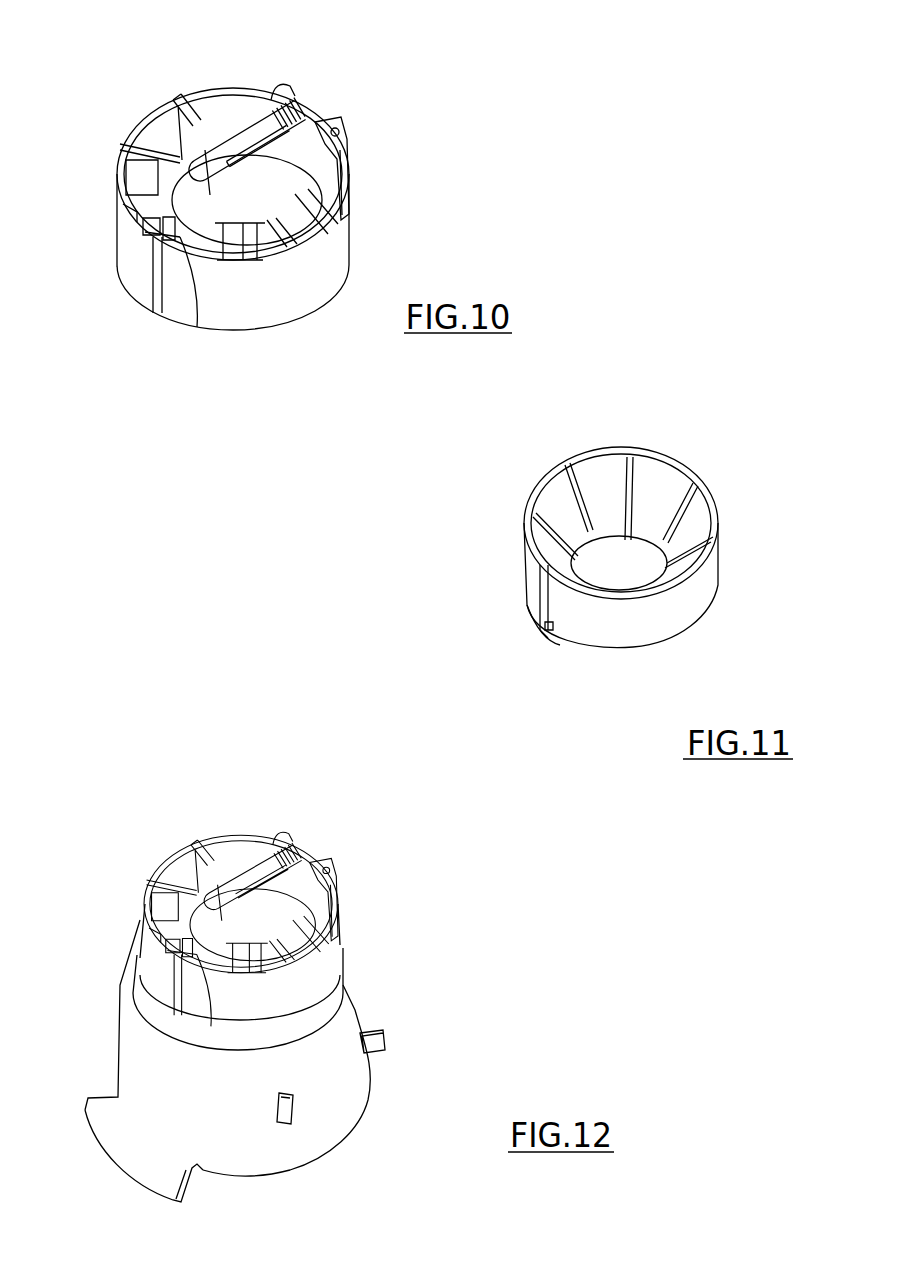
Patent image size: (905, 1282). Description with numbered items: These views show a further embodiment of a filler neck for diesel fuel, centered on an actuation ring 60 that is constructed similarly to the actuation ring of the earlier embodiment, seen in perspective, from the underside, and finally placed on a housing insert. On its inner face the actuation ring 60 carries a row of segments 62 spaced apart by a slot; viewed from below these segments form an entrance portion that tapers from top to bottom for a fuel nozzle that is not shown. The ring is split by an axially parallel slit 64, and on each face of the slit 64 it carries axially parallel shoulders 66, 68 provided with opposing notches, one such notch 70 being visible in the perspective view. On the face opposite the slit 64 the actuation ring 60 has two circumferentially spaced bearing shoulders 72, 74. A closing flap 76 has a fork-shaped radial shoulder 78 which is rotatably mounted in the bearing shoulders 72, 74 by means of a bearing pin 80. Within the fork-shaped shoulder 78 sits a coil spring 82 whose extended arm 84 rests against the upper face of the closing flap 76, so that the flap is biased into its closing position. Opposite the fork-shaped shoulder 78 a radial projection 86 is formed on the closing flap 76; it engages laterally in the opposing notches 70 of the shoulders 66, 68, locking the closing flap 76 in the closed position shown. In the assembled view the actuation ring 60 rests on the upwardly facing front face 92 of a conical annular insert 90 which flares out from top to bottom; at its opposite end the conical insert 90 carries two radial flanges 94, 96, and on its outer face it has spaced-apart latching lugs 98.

In FIG. 10, the actuation ring 60 is at (225, 343).
In FIG. 11, the actuation ring 60 is at (720, 597).
In FIG. 12, the actuation ring 60 is at (321, 970).
In FIG. 10, the segments 62 is at (175, 150).
In FIG. 11, the segments 62 is at (670, 470).
In FIG. 12, the segments 62 is at (183, 853).
In FIG. 10, the axially parallel slit 64 is at (150, 300).
In FIG. 11, the axially parallel slit 64 is at (537, 577).
In FIG. 12, the axially parallel slit 64 is at (195, 950).
In FIG. 10, the axially parallel shoulder 66 is at (125, 210).
In FIG. 11, the axially parallel shoulder 66 is at (540, 627).
In FIG. 12, the axially parallel shoulder 66 is at (147, 883).
In FIG. 10, the axially parallel shoulder 68 is at (195, 315).
In FIG. 11, the axially parallel shoulder 68 is at (567, 643).
In FIG. 12, the axially parallel shoulder 68 is at (165, 1005).
In FIG. 10, the notch 70 is at (150, 223).
In FIG. 12, the notch 70 is at (147, 920).
In FIG. 10, the bearing shoulder 72 is at (275, 100).
In FIG. 12, the bearing shoulder 72 is at (273, 830).
In FIG. 10, the bearing shoulder 74 is at (330, 120).
In FIG. 12, the bearing shoulder 74 is at (330, 867).
In FIG. 10, the closing flap 76 is at (280, 197).
In FIG. 11, the closing flap 76 is at (607, 578).
In FIG. 12, the closing flap 76 is at (283, 906).
In FIG. 10, the fork-shaped radial shoulder 78 is at (283, 102).
In FIG. 12, the fork-shaped radial shoulder 78 is at (241, 833).
In FIG. 10, the bearing pin 80 is at (330, 137).
In FIG. 12, the bearing pin 80 is at (330, 878).
In FIG. 10, the coil spring 82 is at (307, 103).
In FIG. 12, the coil spring 82 is at (300, 847).
In FIG. 10, the extended arm 84 is at (250, 147).
In FIG. 10, the radial projection 86 is at (155, 243).
In FIG. 11, the radial projection 86 is at (540, 630).
In FIG. 12, the radial projection 86 is at (140, 960).
In FIG. 12, the conical annular body or insert 90 is at (345, 1082).
In FIG. 12, the upwardly facing front face 92 is at (345, 975).
In FIG. 12, the radial flange 94 is at (362, 1032).
In FIG. 12, the radial flange 96 is at (127, 1143).
In FIG. 12, the latching lugs 98 is at (290, 1107).